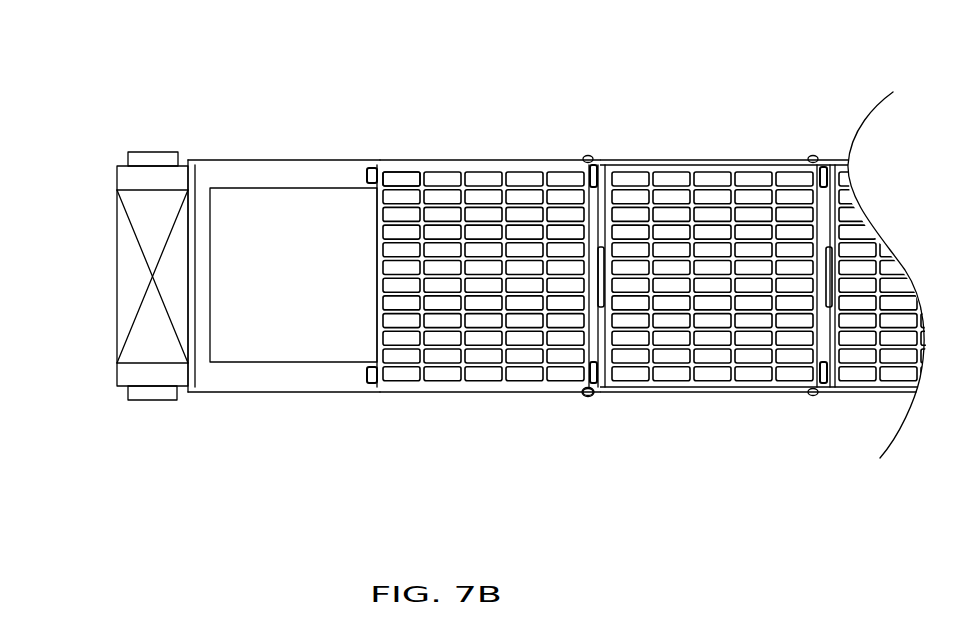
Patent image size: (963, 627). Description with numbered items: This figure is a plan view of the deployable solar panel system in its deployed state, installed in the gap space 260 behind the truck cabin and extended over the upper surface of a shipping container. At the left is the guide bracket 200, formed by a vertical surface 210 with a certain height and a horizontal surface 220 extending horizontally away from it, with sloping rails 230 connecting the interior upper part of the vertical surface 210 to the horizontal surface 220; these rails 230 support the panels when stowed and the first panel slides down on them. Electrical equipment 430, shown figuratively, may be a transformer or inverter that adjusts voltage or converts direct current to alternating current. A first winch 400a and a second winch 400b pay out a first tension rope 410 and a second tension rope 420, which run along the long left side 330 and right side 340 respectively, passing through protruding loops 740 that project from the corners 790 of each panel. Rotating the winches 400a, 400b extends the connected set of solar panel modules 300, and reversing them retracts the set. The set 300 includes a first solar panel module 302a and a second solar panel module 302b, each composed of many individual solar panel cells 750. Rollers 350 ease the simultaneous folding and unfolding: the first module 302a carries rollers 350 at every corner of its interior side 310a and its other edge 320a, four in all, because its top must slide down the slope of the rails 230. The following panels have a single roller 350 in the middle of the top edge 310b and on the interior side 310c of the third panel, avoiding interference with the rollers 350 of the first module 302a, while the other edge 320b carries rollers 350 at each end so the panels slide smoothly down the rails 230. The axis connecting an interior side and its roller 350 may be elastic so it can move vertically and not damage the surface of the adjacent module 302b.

The guide bracket 200 is at (319, 140).
The vertical surface 210 is at (240, 160).
The horizontal surface 220 is at (192, 277).
The rail 230 is at (290, 188).
The gap space 260 is at (220, 233).
The connected set of solar panel modules 300 is at (430, 190).
The first solar panel module 302a is at (478, 411).
The second solar panel module 302b is at (679, 409).
The interior side of first solar panel module 310a is at (377, 268).
The top edge of second solar panel module 310b is at (609, 255).
The interior side of third solar panel module 310c is at (843, 350).
The other edge of first solar panel module 320a is at (580, 354).
The other edge of second solar panel module 320b is at (818, 240).
The left side 330 is at (478, 160).
The right side 340 is at (393, 393).
The roller 350 is at (368, 168).
The first winch 400a is at (142, 150).
The second winch 400b is at (152, 402).
The first tension rope 410 is at (188, 160).
The second tension rope 420 is at (227, 393).
The electrical equipment 430 is at (127, 293).
The protruding loop 740 is at (585, 157).
The solar panel cell 750 is at (395, 185).
The corner 790 is at (598, 410).